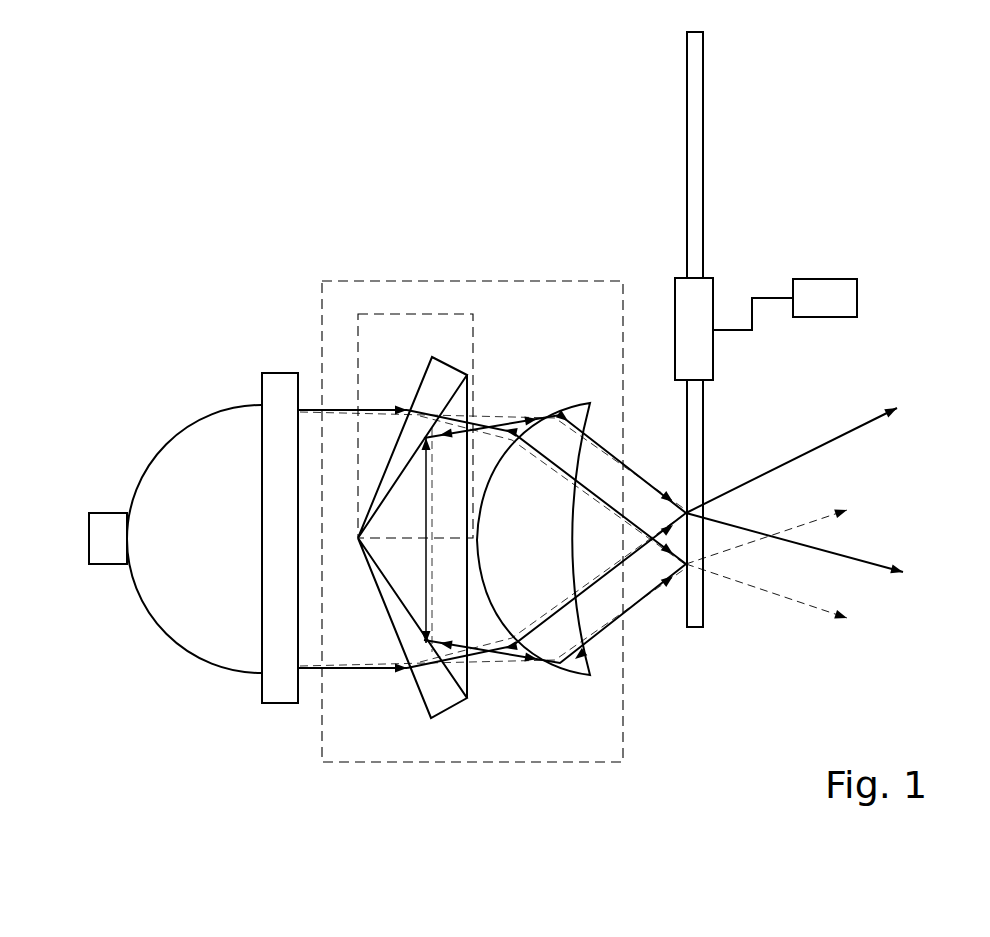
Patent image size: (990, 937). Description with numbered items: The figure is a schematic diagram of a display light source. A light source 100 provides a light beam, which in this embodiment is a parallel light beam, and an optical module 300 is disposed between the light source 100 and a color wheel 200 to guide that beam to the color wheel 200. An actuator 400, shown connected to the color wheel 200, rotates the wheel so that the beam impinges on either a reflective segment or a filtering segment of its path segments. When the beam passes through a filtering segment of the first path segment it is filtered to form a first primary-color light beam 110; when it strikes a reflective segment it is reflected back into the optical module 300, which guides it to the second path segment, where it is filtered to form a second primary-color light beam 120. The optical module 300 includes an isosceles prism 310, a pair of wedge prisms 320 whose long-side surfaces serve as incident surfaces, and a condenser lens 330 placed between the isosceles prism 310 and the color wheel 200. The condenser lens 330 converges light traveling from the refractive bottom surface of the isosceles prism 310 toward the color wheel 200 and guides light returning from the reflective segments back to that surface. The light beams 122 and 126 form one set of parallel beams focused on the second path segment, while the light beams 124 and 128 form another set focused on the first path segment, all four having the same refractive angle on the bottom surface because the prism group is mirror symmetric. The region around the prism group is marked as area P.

The light source 100 is at (187, 627).
The first primary-color light beam 110 is at (808, 450).
The second primary-color light beam 120 is at (797, 603).
The light beam 122 is at (492, 422).
The light beam 124 is at (489, 655).
The light beam 126 is at (513, 669).
The light beam 128 is at (520, 414).
The color wheel 200 is at (703, 183).
The optical module 300 is at (625, 728).
The isosceles prism 310 is at (473, 702).
The wedge prisms 320 is at (425, 385).
The condenser lens 330 is at (568, 673).
The actuator 400 is at (823, 279).
The area P is at (414, 313).